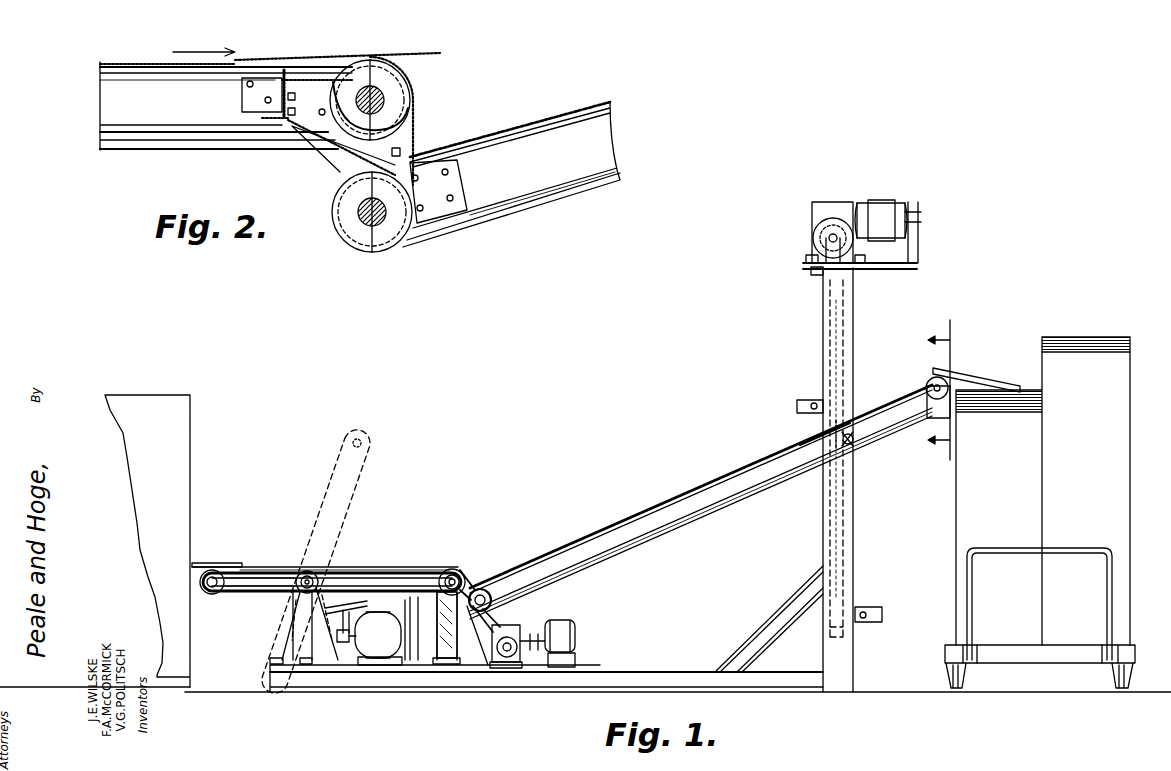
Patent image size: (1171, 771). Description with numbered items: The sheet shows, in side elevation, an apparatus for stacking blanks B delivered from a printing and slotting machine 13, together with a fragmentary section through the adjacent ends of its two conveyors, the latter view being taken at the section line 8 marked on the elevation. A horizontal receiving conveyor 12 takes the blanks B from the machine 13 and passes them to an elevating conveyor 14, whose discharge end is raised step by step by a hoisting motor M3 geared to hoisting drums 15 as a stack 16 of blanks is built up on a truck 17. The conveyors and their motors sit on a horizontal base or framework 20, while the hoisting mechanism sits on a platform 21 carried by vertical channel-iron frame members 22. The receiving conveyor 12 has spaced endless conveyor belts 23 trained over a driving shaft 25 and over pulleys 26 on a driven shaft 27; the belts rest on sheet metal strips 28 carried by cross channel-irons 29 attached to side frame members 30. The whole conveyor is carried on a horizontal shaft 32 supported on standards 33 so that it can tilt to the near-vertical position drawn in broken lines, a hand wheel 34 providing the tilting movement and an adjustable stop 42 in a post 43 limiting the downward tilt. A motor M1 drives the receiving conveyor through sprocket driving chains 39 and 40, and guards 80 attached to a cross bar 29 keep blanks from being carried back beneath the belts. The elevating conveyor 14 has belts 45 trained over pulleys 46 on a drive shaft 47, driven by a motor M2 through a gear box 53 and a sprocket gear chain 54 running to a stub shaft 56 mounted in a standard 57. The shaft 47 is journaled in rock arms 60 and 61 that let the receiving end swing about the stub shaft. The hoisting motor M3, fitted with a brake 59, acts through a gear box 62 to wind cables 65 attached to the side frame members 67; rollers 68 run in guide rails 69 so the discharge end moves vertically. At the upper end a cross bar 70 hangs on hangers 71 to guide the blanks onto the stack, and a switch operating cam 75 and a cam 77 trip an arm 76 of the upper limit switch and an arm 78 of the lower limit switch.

In FIG. 1, the receiving conveyor 12 is at (398, 560).
In FIG. 1, the printing and slotting machine 13 is at (192, 498).
In FIG. 2, the elevating conveyor 14 is at (560, 159).
In FIG. 1, the elevating conveyor 14 is at (636, 512).
In FIG. 1, the hoisting drums 15 is at (812, 237).
In FIG. 1, the stack 16 is at (958, 496).
In FIG. 1, the truck 17 is at (1063, 655).
In FIG. 1, the base or framework 20 is at (676, 672).
In FIG. 1, the platform 21 is at (893, 270).
In FIG. 1, the vertical channel-iron frame members 22 is at (814, 276).
In FIG. 2, the endless conveyor belts 23 is at (236, 63).
In FIG. 1, the endless conveyor belts 23 is at (418, 567).
In FIG. 1, the driving shaft 25 is at (212, 594).
In FIG. 2, the pulleys 26 is at (392, 79).
In FIG. 2, the driven shaft 27 is at (384, 100).
In FIG. 2, the sheet metal strips 28 is at (192, 72).
In FIG. 2, the cross channel-irons 29 is at (282, 83).
In FIG. 2, the side frame members 30 is at (115, 114).
In FIG. 1, the horizontal shaft 32 is at (309, 570).
In FIG. 1, the standards 33 is at (300, 622).
In FIG. 1, the hand wheel 34 is at (352, 610).
In FIG. 1, the sprocket driving chain 39 is at (280, 610).
In FIG. 1, the sprocket driving chain 40 is at (252, 592).
In FIG. 1, the adjustable stop 42 is at (438, 592).
In FIG. 1, the post 43 is at (412, 643).
In FIG. 2, the endless conveyor belts 45 is at (566, 203).
In FIG. 1, the endless conveyor belts 45 is at (754, 462).
In FIG. 2, the pulleys 46 is at (358, 222).
In FIG. 2, the drive shaft 47 is at (360, 206).
In FIG. 1, the gear box 53 is at (520, 626).
In FIG. 1, the sprocket gear chain 54 is at (505, 627).
In FIG. 1, the stub shaft 56 is at (462, 576).
In FIG. 1, the standard 57 is at (447, 645).
In FIG. 1, the brake 59 is at (918, 212).
In FIG. 1, the rock arm 60 is at (484, 588).
In FIG. 2, the rock arm 61 is at (345, 160).
In FIG. 1, the gear box 62 is at (846, 200).
In FIG. 1, the cables 65 is at (848, 360).
In FIG. 2, the side frame members 67 is at (614, 160).
In FIG. 1, the side frame members 67 is at (655, 519).
In FIG. 1, the rollers 68 is at (848, 450).
In FIG. 1, the guide rails 69 is at (826, 510).
In FIG. 1, the cross bar 70 is at (950, 418).
In FIG. 1, the hangers 71 is at (932, 418).
In FIG. 1, the switch operating cam 75 is at (822, 435).
In FIG. 1, the arm of upper limit switch 76 is at (815, 402).
In FIG. 1, the cam 77 is at (856, 439).
In FIG. 1, the arm of lower limit switch 78 is at (862, 608).
In FIG. 2, the guards 80 is at (414, 130).
In FIG. 2, the blanks B is at (416, 51).
In FIG. 1, the blanks B is at (214, 564).
In FIG. 1, the section line 8 is at (953, 390).
In FIG. 1, the motor M1 is at (398, 618).
In FIG. 1, the motor M2 is at (568, 622).
In FIG. 1, the hoisting motor M3 is at (880, 200).